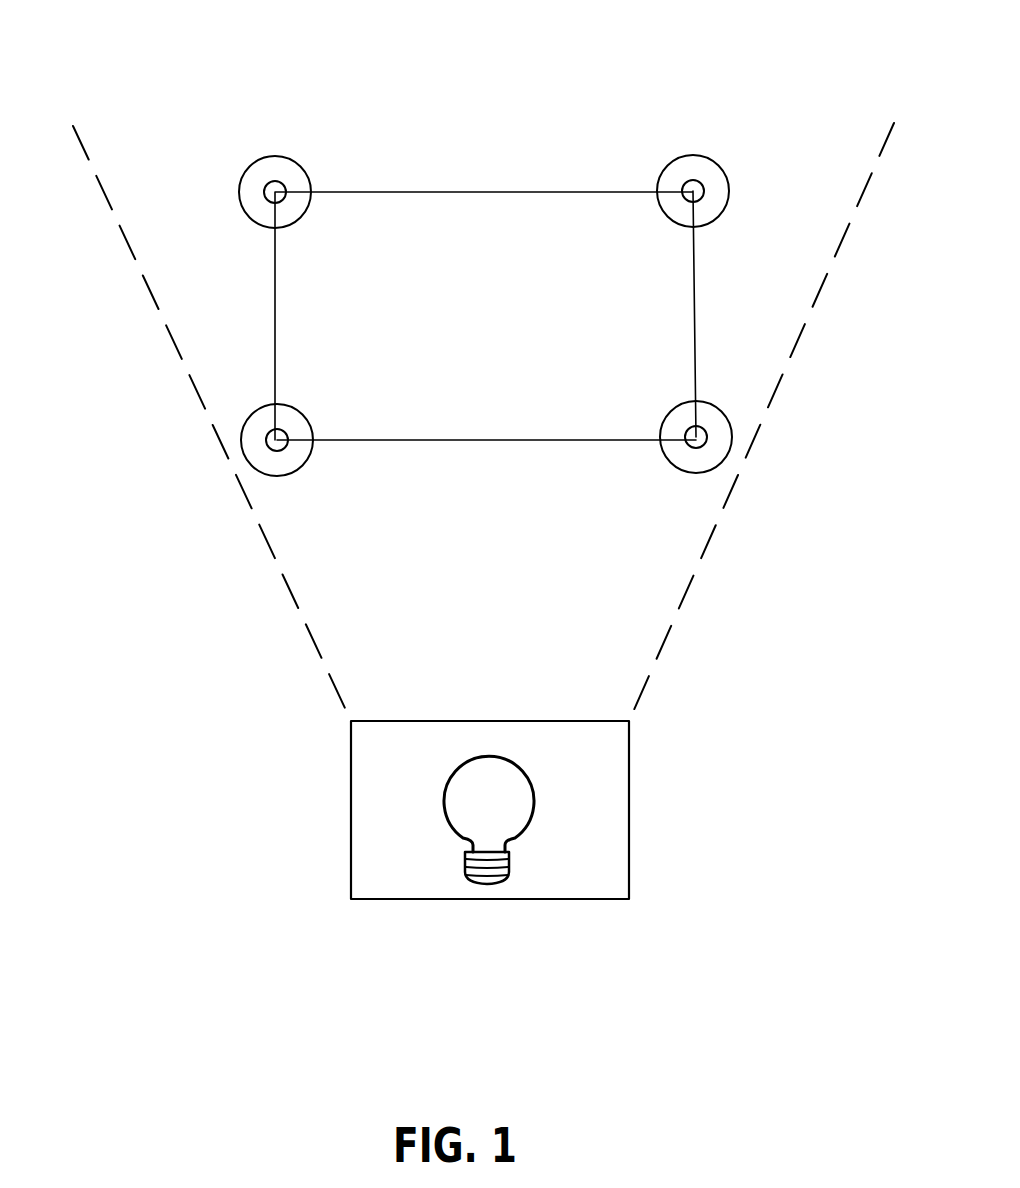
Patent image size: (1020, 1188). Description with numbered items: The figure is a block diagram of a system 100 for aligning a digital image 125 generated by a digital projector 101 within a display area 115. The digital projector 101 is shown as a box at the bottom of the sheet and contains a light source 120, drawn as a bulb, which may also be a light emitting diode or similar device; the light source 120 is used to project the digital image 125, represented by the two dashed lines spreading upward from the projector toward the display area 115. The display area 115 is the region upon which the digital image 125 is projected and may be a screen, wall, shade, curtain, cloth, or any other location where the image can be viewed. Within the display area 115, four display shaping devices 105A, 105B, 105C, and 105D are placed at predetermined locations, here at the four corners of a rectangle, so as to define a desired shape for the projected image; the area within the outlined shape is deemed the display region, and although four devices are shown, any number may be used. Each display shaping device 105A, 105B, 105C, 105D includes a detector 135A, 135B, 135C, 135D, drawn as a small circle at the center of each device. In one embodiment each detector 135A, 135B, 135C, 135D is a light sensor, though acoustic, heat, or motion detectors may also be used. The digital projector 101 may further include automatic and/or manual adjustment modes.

The system 100 is at (479, 78).
The digital projector 101 is at (350, 822).
The display shaping device 105A is at (278, 476).
The display shaping device 105B is at (270, 158).
The display shaping device 105C is at (692, 155).
The display shaping device 105D is at (696, 473).
The display area 115 is at (503, 339).
The light source 120 is at (568, 852).
The digital image 125 is at (708, 540).
The detector 135A is at (285, 448).
The detector 135B is at (283, 184).
The detector 135C is at (687, 181).
The detector 135D is at (688, 445).